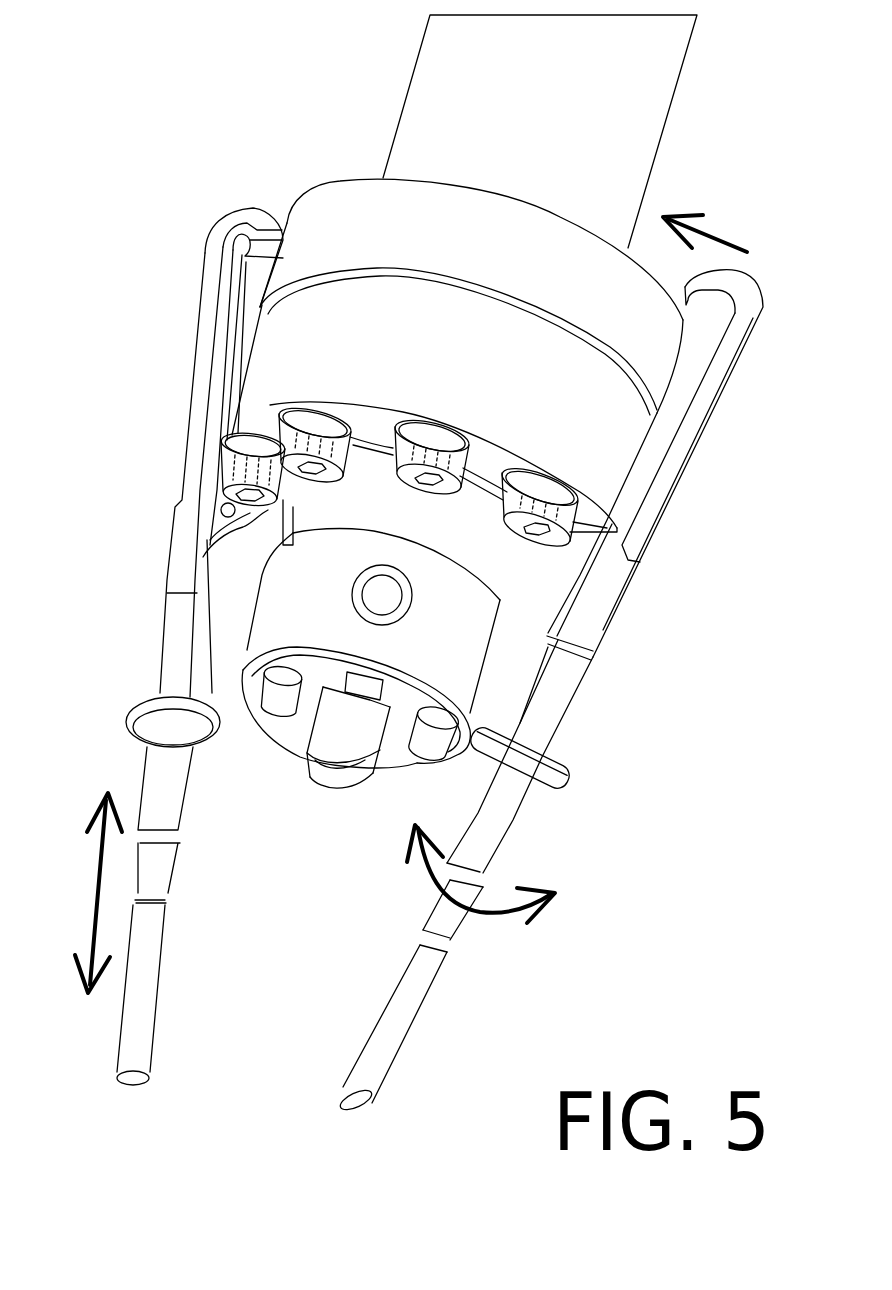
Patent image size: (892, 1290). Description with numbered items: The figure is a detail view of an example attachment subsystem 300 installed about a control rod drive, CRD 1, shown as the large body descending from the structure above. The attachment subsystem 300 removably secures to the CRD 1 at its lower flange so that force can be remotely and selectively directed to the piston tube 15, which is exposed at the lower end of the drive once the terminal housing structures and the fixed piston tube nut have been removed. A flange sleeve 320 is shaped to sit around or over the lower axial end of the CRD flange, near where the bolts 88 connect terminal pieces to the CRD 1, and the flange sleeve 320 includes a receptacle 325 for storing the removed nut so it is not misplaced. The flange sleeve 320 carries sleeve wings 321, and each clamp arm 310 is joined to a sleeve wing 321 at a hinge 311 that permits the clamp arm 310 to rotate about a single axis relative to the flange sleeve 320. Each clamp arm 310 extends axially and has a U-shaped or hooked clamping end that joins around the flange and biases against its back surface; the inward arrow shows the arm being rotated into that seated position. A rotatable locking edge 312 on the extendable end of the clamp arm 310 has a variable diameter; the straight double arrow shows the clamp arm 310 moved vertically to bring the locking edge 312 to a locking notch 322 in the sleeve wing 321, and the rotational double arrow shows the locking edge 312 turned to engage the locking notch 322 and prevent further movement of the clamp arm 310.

The CRD 1 is at (530, 88).
The attachment subsystem 300 is at (147, 192).
The bolts 88 is at (252, 472).
The locking notch 322 is at (170, 543).
The sleeve wing 321 is at (227, 643).
The flange sleeve 320 is at (285, 630).
The hinge 311 is at (628, 573).
The receptacle 325 is at (410, 590).
The clamp arm 310 is at (577, 693).
The locking edge 312 is at (563, 787).
The piston tube 15 is at (333, 790).